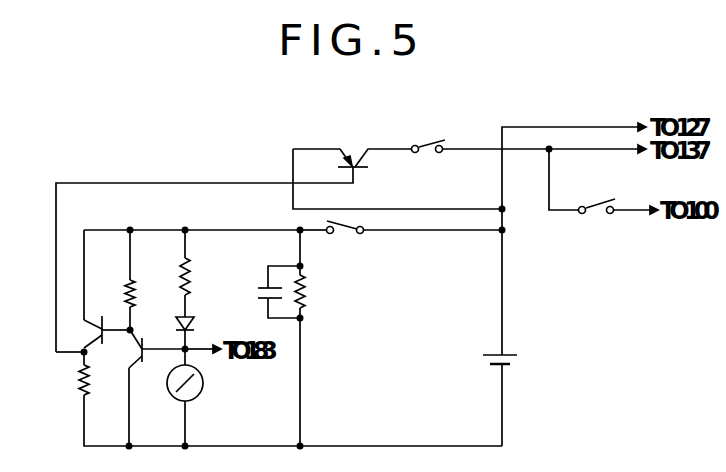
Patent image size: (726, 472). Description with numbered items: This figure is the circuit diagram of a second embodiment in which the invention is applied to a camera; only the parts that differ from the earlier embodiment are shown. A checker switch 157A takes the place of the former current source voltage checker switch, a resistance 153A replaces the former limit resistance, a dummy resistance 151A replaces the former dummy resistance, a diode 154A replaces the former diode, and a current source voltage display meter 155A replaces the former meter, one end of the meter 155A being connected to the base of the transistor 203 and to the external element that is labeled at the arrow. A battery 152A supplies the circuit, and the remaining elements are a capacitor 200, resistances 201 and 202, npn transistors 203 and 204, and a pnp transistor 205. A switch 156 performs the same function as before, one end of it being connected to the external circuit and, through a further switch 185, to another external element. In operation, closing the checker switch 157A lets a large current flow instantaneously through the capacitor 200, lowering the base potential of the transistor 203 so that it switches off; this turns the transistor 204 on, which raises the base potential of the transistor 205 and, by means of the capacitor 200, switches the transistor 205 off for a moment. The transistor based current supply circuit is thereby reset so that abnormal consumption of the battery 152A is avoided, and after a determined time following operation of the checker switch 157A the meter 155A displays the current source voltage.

The pnp transistor 205 is at (352, 158).
The switch 156 is at (431, 142).
The checker switch 157A is at (343, 226).
The switch 185 is at (599, 213).
The capacitor 200 is at (268, 285).
The dummy resistance 151A is at (306, 292).
The limit resistance 153A is at (190, 278).
The diode 154A is at (194, 325).
The resistance 201 is at (135, 293).
The npn transistor 204 is at (100, 328).
The resistance 202 is at (79, 379).
The npn transistor 203 is at (143, 356).
The current source voltage display meter 155A is at (203, 383).
The battery 152A is at (518, 362).